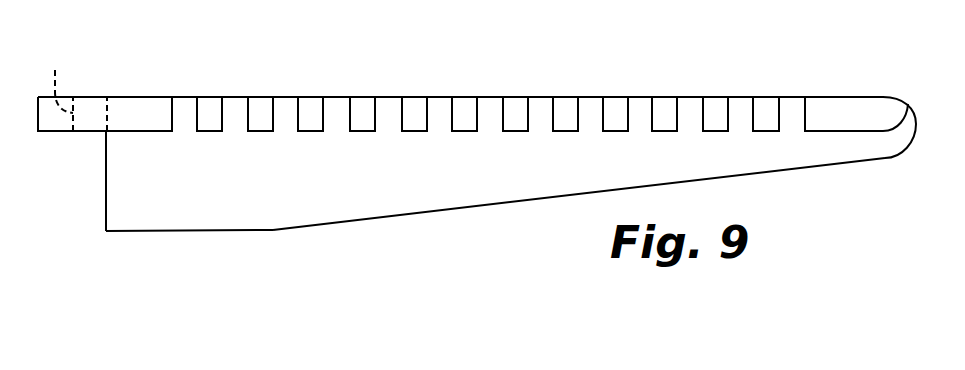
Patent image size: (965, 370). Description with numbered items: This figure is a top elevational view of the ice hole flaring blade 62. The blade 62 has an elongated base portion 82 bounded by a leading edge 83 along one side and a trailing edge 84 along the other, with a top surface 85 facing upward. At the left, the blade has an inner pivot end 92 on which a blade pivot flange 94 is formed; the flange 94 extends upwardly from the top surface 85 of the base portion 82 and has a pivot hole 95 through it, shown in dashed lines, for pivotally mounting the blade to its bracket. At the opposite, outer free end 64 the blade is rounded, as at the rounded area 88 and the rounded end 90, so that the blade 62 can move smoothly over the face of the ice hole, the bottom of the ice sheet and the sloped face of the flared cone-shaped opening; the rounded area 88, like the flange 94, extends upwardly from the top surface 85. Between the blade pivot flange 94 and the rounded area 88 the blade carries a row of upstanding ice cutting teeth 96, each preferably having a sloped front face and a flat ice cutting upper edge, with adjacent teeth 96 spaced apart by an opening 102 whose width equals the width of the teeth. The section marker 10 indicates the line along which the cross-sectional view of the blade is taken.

The section line 10- 10 is at (440, 88).
The ice hole flaring blade 62 is at (675, 87).
The outer free end 64 is at (887, 91).
The base portion 82 is at (375, 202).
The leading edge 83 is at (525, 201).
The trailing edge 84 is at (541, 97).
The top surface 85 is at (242, 208).
The rounded area 88 is at (906, 107).
The rounded end 90 is at (915, 122).
The inner pivot end 92 is at (106, 165).
The blade pivot flange 94 is at (128, 105).
The pivot hole 95 is at (59, 88).
The ice cutting teeth 96 is at (223, 113).
The opening 102 is at (237, 123).